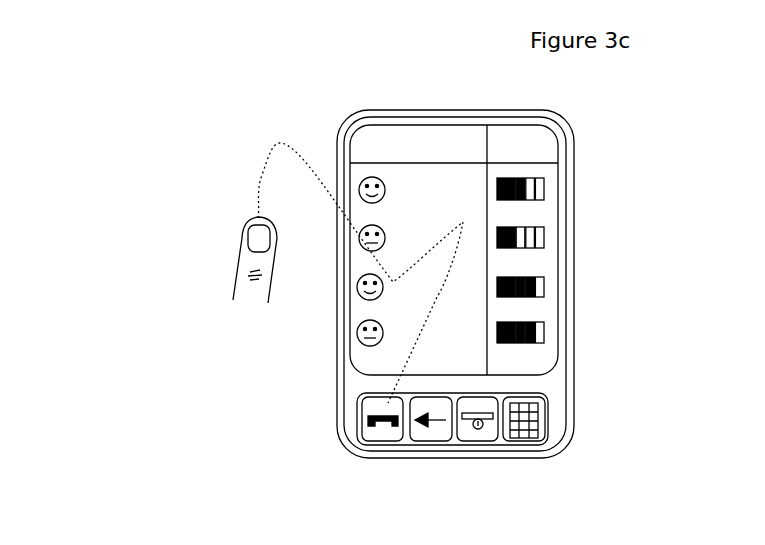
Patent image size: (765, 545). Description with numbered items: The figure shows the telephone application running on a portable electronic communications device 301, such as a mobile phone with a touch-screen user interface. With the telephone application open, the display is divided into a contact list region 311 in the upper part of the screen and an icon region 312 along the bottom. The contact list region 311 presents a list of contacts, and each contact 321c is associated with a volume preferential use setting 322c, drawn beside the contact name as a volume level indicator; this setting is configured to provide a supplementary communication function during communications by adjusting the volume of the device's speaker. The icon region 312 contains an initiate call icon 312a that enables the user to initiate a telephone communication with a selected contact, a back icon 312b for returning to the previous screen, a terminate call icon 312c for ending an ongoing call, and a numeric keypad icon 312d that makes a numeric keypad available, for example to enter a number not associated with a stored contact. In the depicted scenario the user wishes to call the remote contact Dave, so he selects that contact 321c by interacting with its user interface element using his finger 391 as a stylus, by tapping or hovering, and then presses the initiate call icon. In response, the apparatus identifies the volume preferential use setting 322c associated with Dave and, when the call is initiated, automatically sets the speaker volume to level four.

The portable electronic communications device 301 is at (322, 75).
The contact list region 311 is at (355, 236).
The finger 391 is at (245, 240).
The contact 321c is at (359, 297).
The volume preferential use setting 322c is at (540, 288).
The icon region 312 is at (350, 450).
The initiate call icon 312a is at (380, 430).
The back icon 312b is at (428, 430).
The terminate call icon 312c is at (482, 430).
The numeric keypad icon 312d is at (537, 440).